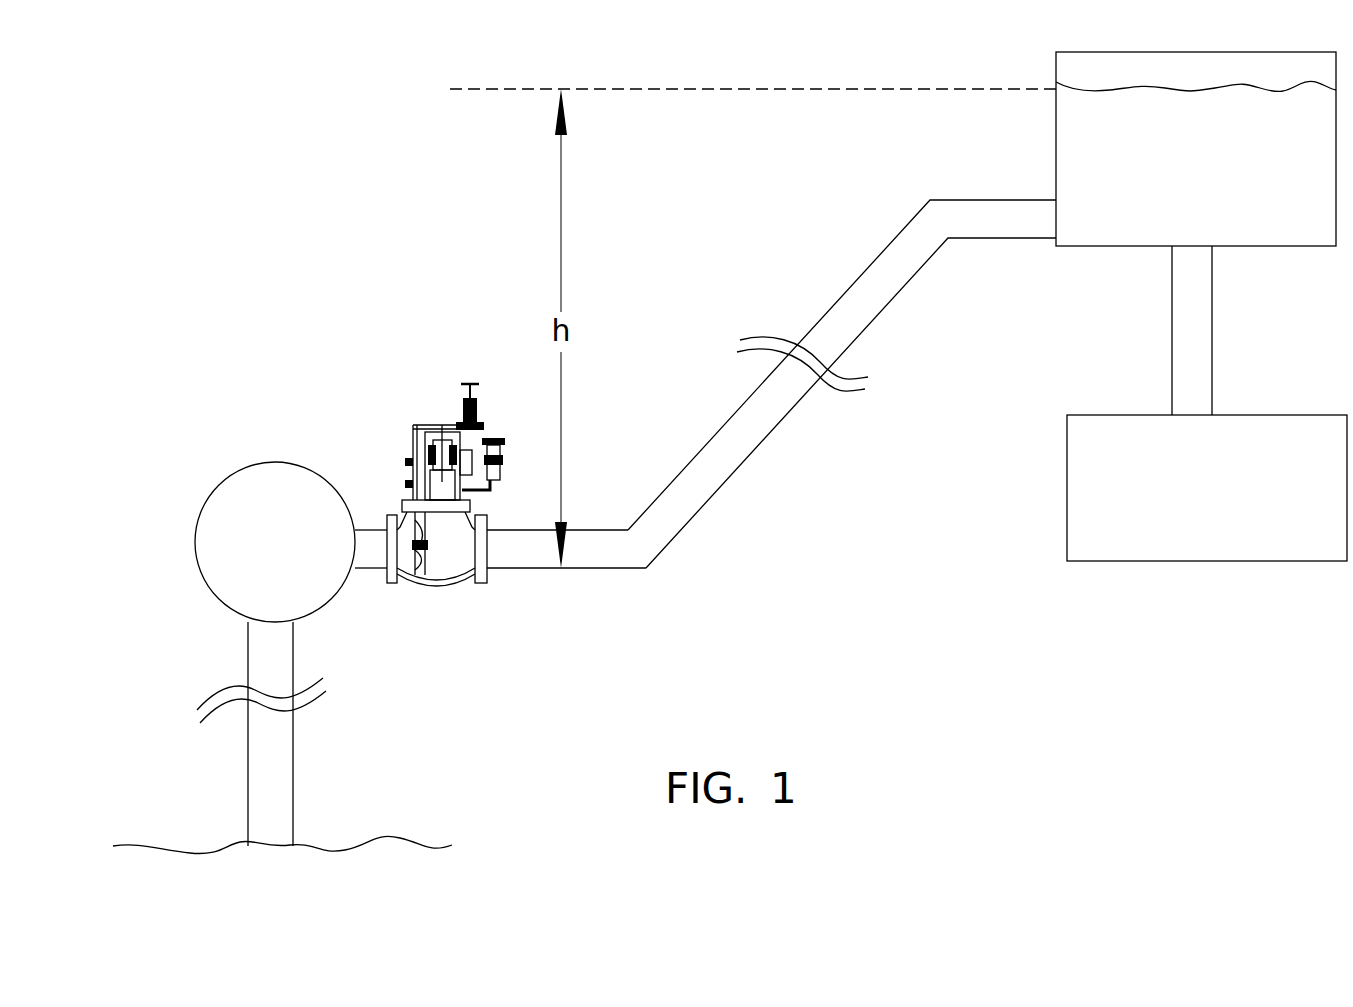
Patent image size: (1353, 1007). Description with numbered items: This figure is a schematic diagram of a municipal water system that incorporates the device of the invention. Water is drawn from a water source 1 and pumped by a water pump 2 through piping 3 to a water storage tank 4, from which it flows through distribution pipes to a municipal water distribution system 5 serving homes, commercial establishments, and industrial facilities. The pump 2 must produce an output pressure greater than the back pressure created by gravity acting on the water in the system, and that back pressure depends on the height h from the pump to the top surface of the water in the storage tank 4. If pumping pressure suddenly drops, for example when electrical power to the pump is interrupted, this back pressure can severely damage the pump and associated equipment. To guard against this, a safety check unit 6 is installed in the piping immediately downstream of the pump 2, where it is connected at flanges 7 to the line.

The water source 1 is at (281, 921).
The water pump 2 is at (228, 478).
The piping 3 is at (853, 308).
The water storage tank 4 is at (1170, 207).
The municipal water distribution system 5 is at (1112, 415).
The safety check unit 6 is at (433, 392).
The flange 7 is at (388, 583).